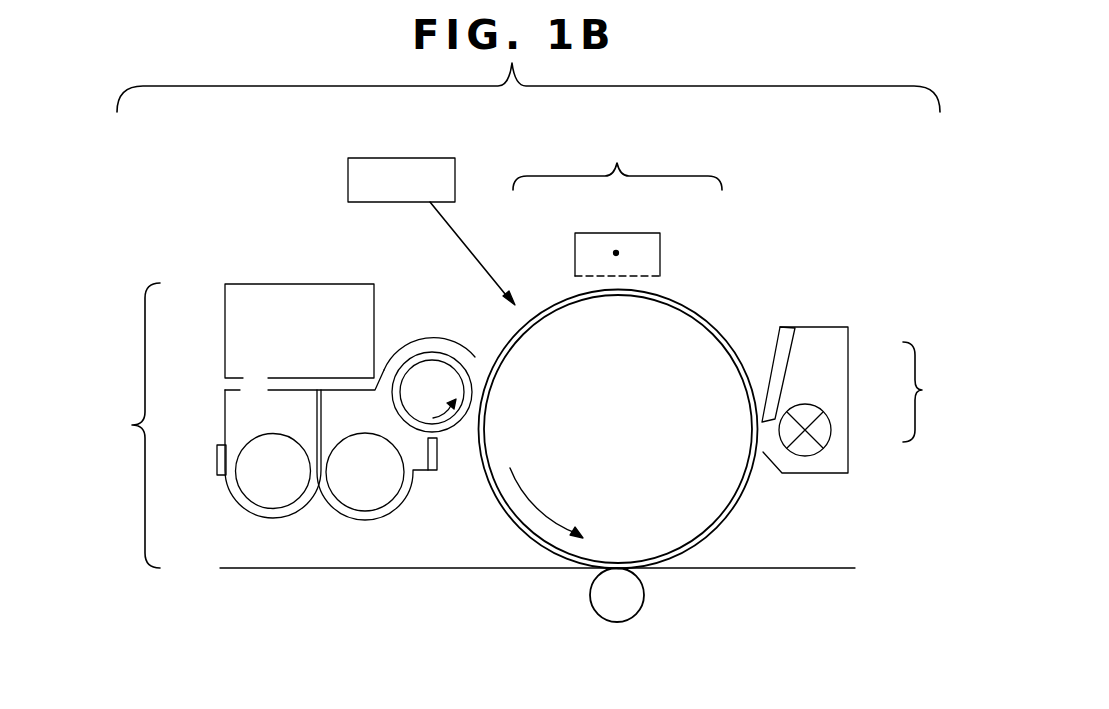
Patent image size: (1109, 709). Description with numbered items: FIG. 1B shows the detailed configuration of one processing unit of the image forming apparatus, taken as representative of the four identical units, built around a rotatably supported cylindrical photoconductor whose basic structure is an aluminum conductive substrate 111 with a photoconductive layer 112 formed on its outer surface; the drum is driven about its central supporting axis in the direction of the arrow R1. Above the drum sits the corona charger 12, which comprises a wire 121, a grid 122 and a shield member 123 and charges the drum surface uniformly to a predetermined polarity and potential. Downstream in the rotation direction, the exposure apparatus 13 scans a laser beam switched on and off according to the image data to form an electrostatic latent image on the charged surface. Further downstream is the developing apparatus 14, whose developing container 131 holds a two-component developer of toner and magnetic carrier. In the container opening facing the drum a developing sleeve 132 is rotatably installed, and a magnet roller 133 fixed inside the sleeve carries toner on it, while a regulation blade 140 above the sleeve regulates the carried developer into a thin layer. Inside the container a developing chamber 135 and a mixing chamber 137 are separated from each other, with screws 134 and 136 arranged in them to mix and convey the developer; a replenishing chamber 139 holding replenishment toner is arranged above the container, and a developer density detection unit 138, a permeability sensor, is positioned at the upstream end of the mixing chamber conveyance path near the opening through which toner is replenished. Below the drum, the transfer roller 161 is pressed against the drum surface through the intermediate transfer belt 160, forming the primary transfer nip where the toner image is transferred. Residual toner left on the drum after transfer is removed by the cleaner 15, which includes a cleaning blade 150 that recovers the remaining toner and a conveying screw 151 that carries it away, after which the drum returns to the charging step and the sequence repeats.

The corona charger 12 is at (619, 213).
The exposure apparatus 13 is at (383, 158).
The developing apparatus 14 is at (291, 425).
The cleaner 15 is at (858, 400).
The aluminum conductive substrate 111 is at (698, 532).
The photoconductive layer 112 is at (690, 318).
The wire 121 is at (616, 251).
The grid 122 is at (592, 276).
The shield member 123 is at (660, 250).
The developing container 131 is at (413, 364).
The developing sleeve 132 is at (430, 352).
The magnet roller 133 is at (434, 472).
The screw 134 is at (352, 490).
The developing chamber 135 is at (365, 434).
The screw 136 is at (262, 490).
The mixing chamber 137 is at (272, 434).
The developer density detection unit 138 is at (217, 455).
The replenishing chamber 139 is at (225, 305).
The regulation blade 140 is at (458, 341).
The cleaning blade 150 is at (793, 350).
The conveying screw 151 is at (831, 430).
The intermediate transfer belt 160 is at (402, 570).
The transfer roller 161 is at (643, 605).
The rotation direction R1 is at (546, 503).